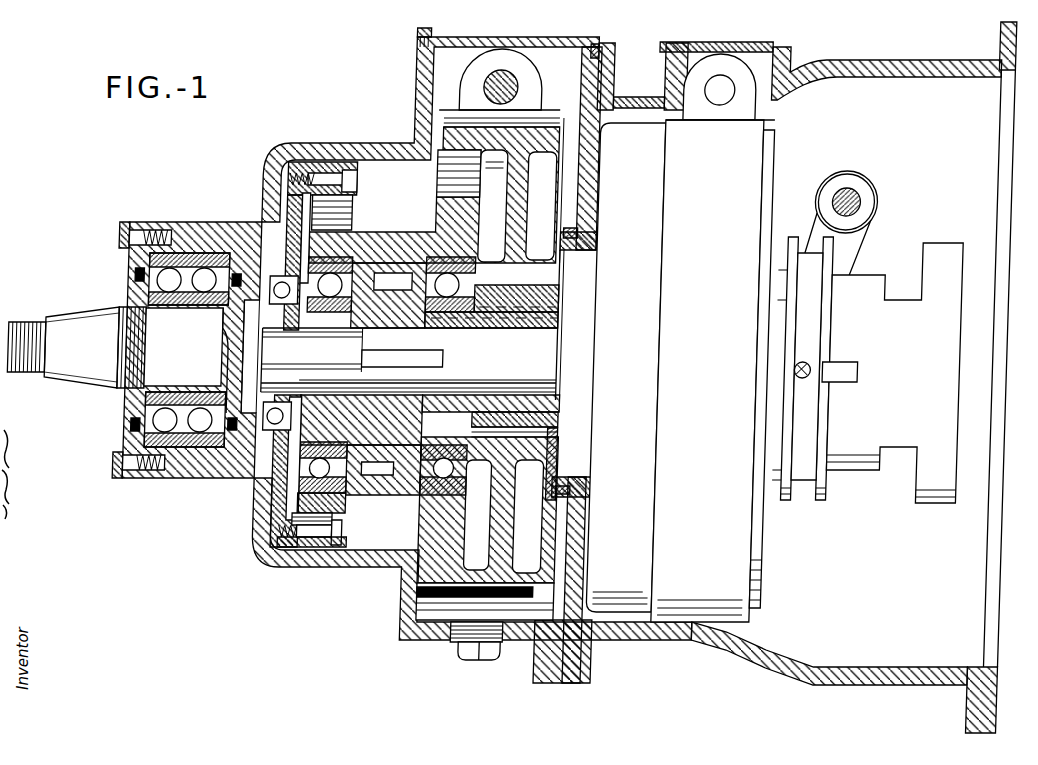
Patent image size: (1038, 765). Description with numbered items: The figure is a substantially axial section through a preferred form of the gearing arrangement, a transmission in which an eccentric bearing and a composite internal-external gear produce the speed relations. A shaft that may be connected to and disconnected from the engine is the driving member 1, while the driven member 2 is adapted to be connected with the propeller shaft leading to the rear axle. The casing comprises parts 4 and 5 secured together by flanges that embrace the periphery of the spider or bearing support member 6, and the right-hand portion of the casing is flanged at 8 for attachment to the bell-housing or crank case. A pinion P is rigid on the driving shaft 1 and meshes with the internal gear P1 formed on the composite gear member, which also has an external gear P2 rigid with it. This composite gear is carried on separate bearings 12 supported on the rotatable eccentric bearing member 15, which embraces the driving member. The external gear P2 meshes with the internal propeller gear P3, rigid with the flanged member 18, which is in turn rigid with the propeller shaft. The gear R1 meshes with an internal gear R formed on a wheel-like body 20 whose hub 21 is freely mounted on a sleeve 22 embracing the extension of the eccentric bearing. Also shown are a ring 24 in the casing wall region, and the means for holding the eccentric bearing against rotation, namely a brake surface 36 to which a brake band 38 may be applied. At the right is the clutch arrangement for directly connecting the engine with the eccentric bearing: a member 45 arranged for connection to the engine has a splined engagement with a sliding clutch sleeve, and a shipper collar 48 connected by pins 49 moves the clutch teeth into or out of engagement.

The driving member 1 is at (411, 325).
The driven member 2 is at (132, 356).
The casing part 4 is at (736, 640).
The casing part 5 is at (337, 562).
The spider or bearing support member 6 is at (580, 528).
The flange 8 is at (977, 703).
The bearings 12 is at (470, 485).
The eccentric bearing member 15 is at (448, 386).
The flanged member 18 is at (277, 468).
The wheel-like body 20 is at (514, 184).
The hub 21 is at (527, 465).
The sleeve 22 is at (557, 424).
The ring member 24 is at (546, 142).
The brake surface 36 is at (626, 367).
The brake band 38 is at (713, 371).
The member 45 is at (881, 337).
The shipper collar 48 is at (803, 368).
The pins 49 is at (812, 366).
The pinion P is at (407, 322).
The internal gear P1 is at (384, 470).
The external gear P2 is at (366, 517).
The propeller gear P3 is at (341, 198).
The internal gear R is at (479, 162).
The gear R1 is at (438, 198).